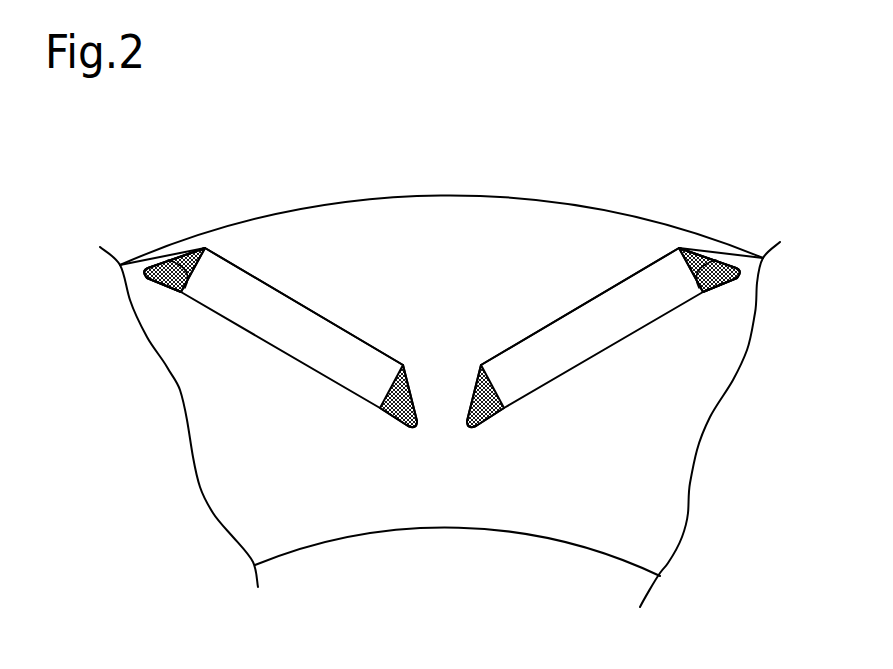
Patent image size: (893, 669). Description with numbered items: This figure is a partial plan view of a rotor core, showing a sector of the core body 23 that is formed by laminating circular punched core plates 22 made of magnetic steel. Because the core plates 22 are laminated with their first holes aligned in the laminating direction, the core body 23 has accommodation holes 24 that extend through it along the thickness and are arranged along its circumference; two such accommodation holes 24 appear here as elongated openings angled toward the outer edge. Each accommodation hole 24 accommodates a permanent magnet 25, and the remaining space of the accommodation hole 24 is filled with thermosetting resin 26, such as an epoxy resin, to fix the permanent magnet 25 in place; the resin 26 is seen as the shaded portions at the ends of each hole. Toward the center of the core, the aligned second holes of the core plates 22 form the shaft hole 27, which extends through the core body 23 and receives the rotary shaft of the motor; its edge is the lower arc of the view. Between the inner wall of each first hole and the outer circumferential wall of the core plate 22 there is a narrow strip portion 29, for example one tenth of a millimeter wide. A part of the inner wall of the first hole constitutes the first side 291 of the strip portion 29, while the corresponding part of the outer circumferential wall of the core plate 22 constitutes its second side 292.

The core plate 22 is at (512, 217).
The core body 23 is at (395, 197).
The accommodation hole 24 is at (270, 341).
The permanent magnet 25 is at (307, 310).
The thermosetting resin 26 is at (165, 285).
The shaft hole 27 is at (490, 573).
The strip portion 29 is at (178, 248).
The first side 291 is at (195, 274).
The second side 292 is at (152, 246).